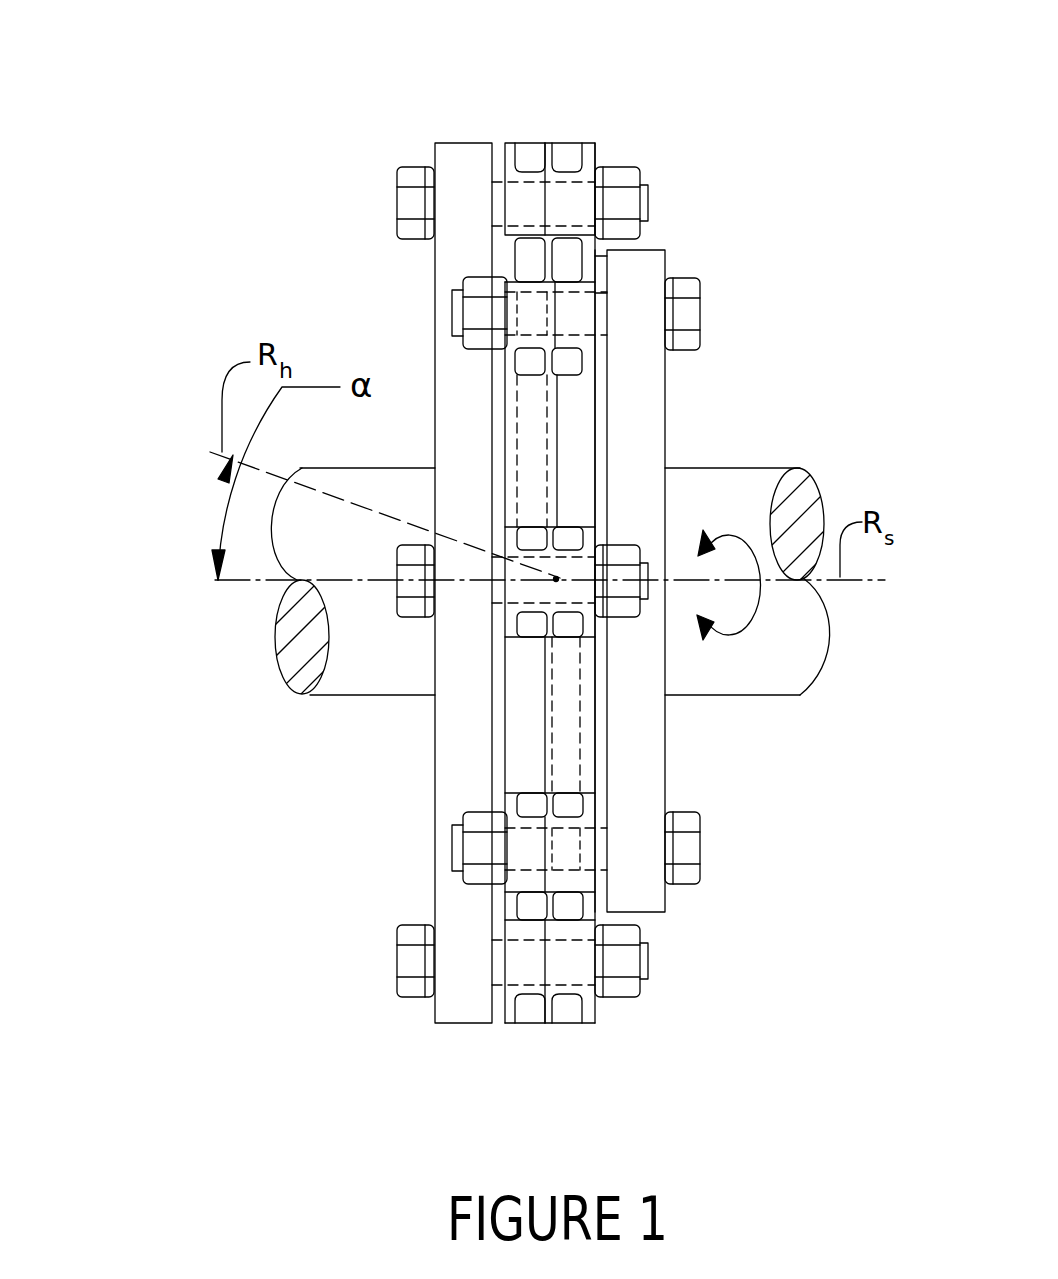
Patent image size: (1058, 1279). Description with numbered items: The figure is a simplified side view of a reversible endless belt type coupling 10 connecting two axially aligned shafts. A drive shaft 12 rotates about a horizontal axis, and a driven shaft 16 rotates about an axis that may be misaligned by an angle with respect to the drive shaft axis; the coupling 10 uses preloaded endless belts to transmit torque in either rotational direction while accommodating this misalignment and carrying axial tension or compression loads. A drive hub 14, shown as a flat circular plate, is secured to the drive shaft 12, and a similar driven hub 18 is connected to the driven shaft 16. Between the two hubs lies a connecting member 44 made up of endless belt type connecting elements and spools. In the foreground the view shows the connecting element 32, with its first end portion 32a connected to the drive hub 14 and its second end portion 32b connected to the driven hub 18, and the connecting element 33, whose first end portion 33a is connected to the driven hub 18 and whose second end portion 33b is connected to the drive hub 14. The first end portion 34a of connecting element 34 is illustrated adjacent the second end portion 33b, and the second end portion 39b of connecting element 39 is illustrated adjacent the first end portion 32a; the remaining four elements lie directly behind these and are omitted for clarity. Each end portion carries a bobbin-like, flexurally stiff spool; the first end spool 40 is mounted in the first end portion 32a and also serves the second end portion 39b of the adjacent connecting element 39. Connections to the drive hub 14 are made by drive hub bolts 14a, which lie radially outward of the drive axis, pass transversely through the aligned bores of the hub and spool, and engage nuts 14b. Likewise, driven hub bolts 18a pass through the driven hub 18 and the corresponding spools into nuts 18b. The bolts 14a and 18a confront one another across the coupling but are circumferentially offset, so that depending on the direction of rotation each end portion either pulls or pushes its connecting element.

The reversible endless belt type coupling 10 is at (210, 878).
The drive shaft 12 is at (780, 652).
The drive hub 14 is at (630, 343).
The drive hub bolt 14a is at (685, 312).
The nut 14b is at (478, 312).
The driven shaft 16 is at (345, 675).
The driven hub 18 is at (458, 175).
The driven hub bolt 18a is at (412, 200).
The nut 18b is at (620, 175).
The connecting element 32 is at (560, 405).
The first end portion 32a is at (532, 303).
The second end portion 32b is at (567, 572).
The connecting element 33 is at (543, 715).
The first end portion 33a is at (565, 610).
The second end portion 33b is at (567, 847).
The connecting element 34 is at (533, 1000).
The first end portion 34a is at (537, 965).
The connecting element 39 is at (573, 160).
The second end portion 39b is at (517, 238).
The first end spool 40 is at (640, 252).
The connecting member 44 is at (572, 95).